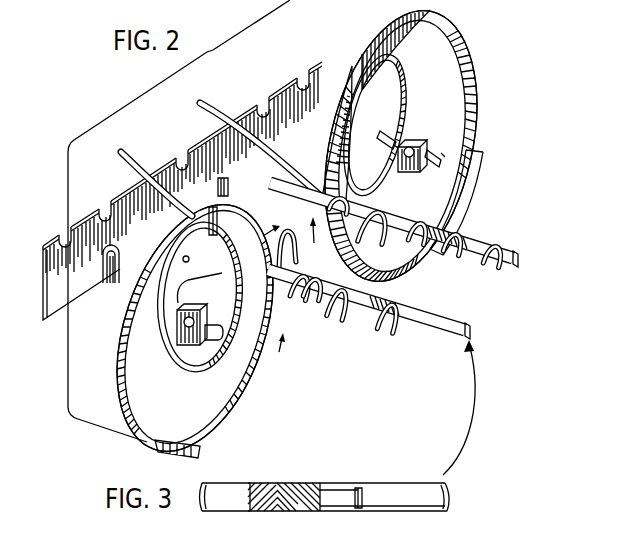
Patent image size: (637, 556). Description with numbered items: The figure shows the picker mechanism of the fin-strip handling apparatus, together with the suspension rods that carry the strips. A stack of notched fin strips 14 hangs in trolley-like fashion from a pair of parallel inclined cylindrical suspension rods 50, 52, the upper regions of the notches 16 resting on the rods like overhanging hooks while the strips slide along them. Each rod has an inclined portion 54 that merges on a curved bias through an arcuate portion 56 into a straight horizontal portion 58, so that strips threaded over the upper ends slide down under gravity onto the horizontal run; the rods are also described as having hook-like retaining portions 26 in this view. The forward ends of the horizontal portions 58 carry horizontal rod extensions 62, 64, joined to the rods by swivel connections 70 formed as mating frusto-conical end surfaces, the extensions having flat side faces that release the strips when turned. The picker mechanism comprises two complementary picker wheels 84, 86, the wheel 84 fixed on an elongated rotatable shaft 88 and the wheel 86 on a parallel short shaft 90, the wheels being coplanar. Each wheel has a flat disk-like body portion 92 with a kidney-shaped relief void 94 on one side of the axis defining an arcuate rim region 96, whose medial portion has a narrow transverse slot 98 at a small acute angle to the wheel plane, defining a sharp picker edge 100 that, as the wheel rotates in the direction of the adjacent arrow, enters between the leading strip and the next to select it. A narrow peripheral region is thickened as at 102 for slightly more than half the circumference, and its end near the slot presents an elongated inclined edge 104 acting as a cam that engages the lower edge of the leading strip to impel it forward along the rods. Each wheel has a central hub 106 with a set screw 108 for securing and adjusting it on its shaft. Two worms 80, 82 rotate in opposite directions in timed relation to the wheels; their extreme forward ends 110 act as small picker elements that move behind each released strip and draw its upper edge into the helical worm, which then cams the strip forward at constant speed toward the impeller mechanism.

In FIG. 2, the fin strip 14 is at (281, 78).
In FIG. 2, the notch 16 is at (103, 203).
In FIG. 2, the hook tab 26 is at (110, 284).
In FIG. 2, the suspension rod 50 is at (120, 147).
In FIG. 2, the suspension rod 52 is at (201, 100).
In FIG. 2, the inclined portion 54 is at (140, 176).
In FIG. 2, the arcuate portion 56 is at (240, 300).
In FIG. 2, the horizontal portion 58 is at (300, 283).
In FIG. 3, the horizontal portion 58 is at (228, 511).
In FIG. 2, the rod extension 62 is at (344, 300).
In FIG. 3, the rod extension 62 is at (343, 511).
In FIG. 2, the rod extension 64 is at (427, 228).
In FIG. 2, the swivel connection 70 is at (390, 218).
In FIG. 3, the swivel connection 70 is at (276, 511).
In FIG. 2, the worm 80 is at (395, 318).
In FIG. 2, the worm 82 is at (489, 266).
In FIG. 2, the picker wheel 84 is at (233, 397).
In FIG. 2, the picker wheel 86 is at (484, 112).
In FIG. 2, the rotatable shaft 88 is at (205, 338).
In FIG. 2, the short shaft 90 is at (441, 153).
In FIG. 2, the body portion 92 is at (127, 380).
In FIG. 2, the relief void 94 is at (185, 257).
In FIG. 2, the arcuate rim region 96 is at (228, 220).
In FIG. 2, the transverse slot 98 is at (197, 208).
In FIG. 2, the picker edge 100 is at (211, 240).
In FIG. 2, the thickened portion 102 is at (480, 179).
In FIG. 2, the inclined edge 104 is at (216, 178).
In FIG. 2, the central hub 106 is at (205, 343).
In FIG. 2, the set screw 108 is at (185, 333).
In FIG. 2, the forward end of worm 110 is at (322, 192).